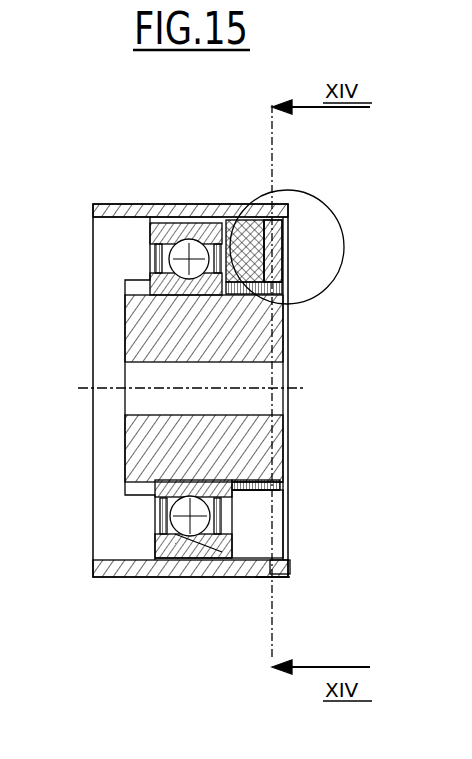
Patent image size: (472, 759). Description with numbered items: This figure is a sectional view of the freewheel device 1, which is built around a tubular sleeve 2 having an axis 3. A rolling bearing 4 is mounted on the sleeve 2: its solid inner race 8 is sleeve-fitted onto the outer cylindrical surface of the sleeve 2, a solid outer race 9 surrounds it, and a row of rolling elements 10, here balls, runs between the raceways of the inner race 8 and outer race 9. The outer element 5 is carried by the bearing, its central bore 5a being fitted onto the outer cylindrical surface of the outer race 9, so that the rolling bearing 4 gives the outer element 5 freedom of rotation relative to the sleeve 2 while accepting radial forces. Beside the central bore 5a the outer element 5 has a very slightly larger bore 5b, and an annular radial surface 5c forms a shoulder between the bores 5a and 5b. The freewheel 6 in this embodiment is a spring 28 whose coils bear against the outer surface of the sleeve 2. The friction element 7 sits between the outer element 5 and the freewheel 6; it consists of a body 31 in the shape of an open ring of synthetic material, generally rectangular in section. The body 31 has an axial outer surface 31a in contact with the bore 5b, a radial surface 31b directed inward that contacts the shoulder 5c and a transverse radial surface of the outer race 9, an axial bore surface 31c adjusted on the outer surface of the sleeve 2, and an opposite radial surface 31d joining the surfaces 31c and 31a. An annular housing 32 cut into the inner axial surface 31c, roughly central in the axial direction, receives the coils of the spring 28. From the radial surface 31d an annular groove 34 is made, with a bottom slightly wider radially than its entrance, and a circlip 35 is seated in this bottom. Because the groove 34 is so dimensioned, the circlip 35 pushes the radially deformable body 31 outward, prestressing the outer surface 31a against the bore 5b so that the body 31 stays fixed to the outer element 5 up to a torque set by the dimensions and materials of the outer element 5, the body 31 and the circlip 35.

The freewheel device 1 is at (78, 182).
The tubular sleeve 2 is at (160, 320).
The axis 3 is at (82, 386).
The rolling bearing 4 is at (138, 255).
The outer element 5 is at (142, 214).
The central bore 5a is at (172, 214).
The bore 5b is at (270, 214).
The annular radial surface 5c is at (236, 214).
The freewheel 6 is at (270, 478).
The friction element 7 is at (265, 528).
The inner race 8 is at (160, 484).
The outer race 9 is at (160, 560).
The rolling elements 10 is at (160, 538).
The spring 28 is at (270, 318).
The body 31 is at (283, 290).
The axial outer surface 31a is at (270, 580).
The radial surface 31b is at (188, 545).
The axial bore surface 31c is at (258, 462).
The radial surface 31d is at (290, 550).
The annular housing 32 is at (250, 490).
The annular groove 34 is at (281, 262).
The circlip 35 is at (282, 203).